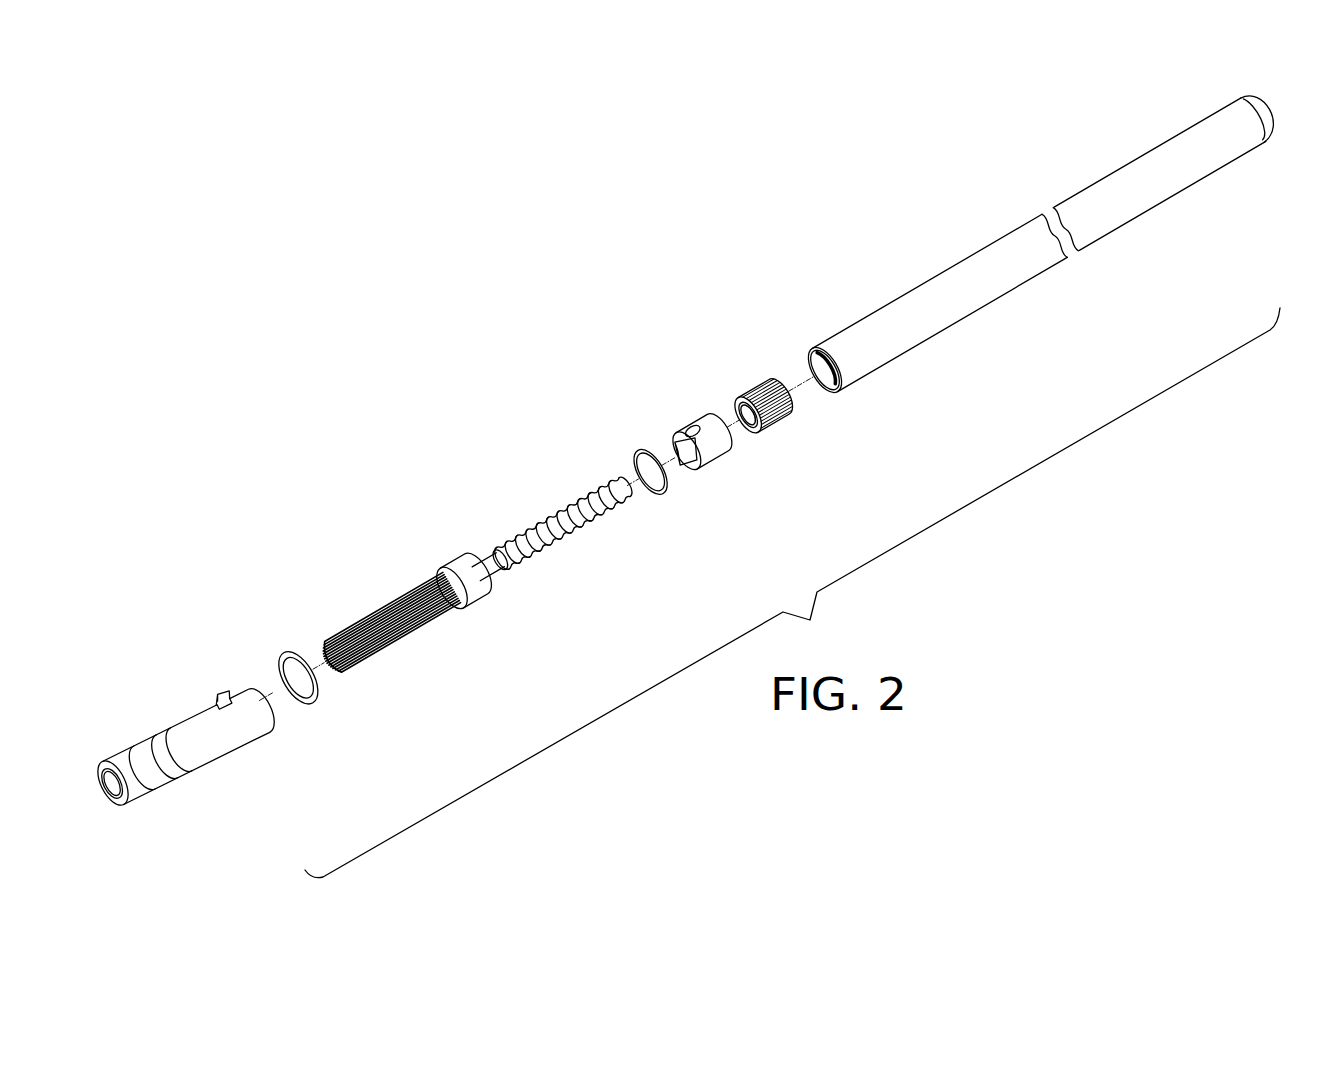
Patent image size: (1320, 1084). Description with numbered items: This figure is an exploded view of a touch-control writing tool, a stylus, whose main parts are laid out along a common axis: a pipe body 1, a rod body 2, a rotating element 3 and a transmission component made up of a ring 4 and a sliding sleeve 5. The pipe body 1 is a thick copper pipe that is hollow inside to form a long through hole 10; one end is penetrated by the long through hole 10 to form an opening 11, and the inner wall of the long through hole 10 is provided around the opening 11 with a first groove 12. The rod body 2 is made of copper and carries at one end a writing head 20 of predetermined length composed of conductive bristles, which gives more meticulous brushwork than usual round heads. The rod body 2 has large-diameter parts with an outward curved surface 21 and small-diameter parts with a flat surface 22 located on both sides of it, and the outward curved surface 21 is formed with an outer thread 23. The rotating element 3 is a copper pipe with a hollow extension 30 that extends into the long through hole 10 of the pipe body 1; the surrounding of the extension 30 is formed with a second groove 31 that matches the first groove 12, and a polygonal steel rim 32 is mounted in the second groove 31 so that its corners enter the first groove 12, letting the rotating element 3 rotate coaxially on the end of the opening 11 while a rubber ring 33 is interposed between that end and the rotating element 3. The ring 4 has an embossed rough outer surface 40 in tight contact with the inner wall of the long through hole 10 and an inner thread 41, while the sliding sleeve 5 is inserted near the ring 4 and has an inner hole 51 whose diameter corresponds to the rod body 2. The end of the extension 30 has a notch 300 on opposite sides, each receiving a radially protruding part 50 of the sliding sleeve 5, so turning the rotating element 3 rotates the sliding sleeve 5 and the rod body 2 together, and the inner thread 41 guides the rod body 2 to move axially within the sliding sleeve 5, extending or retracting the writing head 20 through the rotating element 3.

The pipe body 1 is at (1021, 272).
The long through hole 10 is at (813, 362).
The opening 11 is at (833, 390).
The first groove 12 is at (840, 362).
The rod body 2 is at (476, 570).
The writing head 20 is at (377, 610).
The outward curved surface 21 is at (553, 561).
The threaded section 22 is at (530, 537).
The outer thread 23 is at (597, 527).
The rotating element 3 is at (186, 721).
The extension 30 is at (215, 740).
The second groove 31 is at (187, 740).
The notch 300 is at (238, 687).
The steel rim 32 is at (668, 490).
The rubber ring 33 is at (320, 691).
The ring 4 is at (778, 429).
The outer surface 40 is at (782, 410).
The inner thread 41 is at (738, 410).
The sliding sleeve 5 is at (690, 416).
The protruding part 50 is at (696, 421).
The inner hole 51 is at (683, 450).